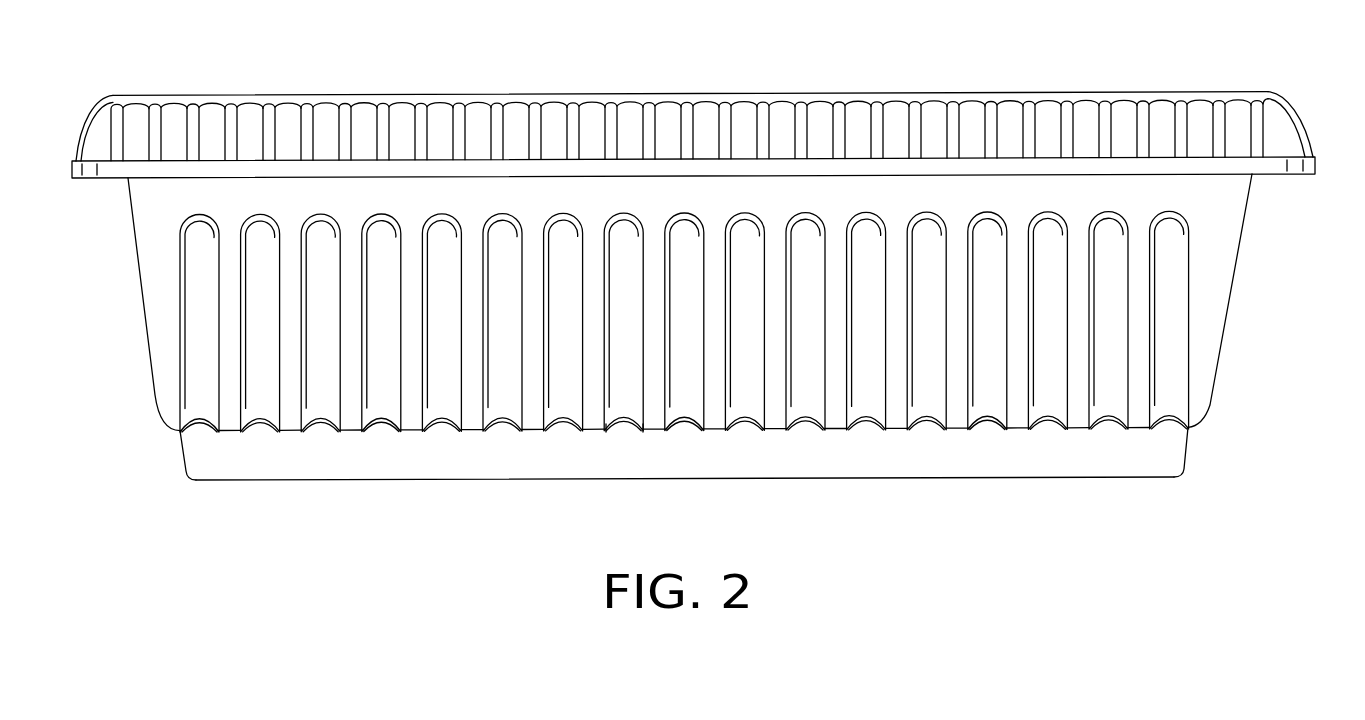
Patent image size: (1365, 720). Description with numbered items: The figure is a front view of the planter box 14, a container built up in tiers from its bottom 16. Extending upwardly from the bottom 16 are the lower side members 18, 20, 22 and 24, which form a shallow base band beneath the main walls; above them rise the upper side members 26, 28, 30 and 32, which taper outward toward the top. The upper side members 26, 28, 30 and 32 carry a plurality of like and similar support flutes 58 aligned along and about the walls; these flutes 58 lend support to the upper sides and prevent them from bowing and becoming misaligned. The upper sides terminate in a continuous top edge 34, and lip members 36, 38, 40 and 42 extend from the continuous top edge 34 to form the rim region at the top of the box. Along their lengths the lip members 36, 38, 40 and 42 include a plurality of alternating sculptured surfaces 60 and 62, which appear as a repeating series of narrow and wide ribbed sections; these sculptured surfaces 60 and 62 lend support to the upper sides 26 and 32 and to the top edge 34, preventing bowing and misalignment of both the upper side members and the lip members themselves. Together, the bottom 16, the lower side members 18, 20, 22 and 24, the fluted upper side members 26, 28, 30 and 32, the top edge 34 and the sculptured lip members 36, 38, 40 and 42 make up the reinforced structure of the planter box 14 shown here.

The planter box 14 is at (1252, 63).
The bottom 16 is at (783, 477).
The lower side member 18 is at (182, 455).
The lower side member 20 is at (615, 452).
The lower side member 22 is at (1188, 450).
The lower side member 24 is at (651, 450).
The upper side member 26 is at (140, 273).
The upper side member 28 is at (588, 197).
The upper side member 30 is at (1240, 267).
The upper side member 32 is at (625, 197).
The continuous top edge 34 is at (289, 95).
The lip member 36 is at (79, 130).
The lip member 38 is at (473, 130).
The lip member 40 is at (1306, 118).
The lip member 42 is at (436, 130).
The support flute 58 is at (200, 332).
The sculptured surface 60 is at (113, 111).
The sculptured surface 62 is at (135, 113).